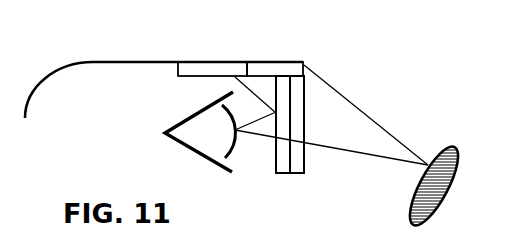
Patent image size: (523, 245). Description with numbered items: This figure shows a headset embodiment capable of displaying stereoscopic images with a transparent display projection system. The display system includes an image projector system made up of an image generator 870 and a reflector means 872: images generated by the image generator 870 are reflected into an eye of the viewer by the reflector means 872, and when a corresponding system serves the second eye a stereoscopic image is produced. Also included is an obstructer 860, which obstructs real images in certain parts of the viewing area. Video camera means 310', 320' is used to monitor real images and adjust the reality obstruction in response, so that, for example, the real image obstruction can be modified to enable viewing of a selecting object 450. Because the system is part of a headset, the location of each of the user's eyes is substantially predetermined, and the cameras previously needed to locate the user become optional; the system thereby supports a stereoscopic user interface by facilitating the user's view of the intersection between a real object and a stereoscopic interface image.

The image generator 870 is at (215, 61).
The video camera means 310' is at (215, 39).
The display element 320' is at (275, 69).
The obstructer 860 is at (295, 175).
The reflector means 872 is at (282, 175).
The selecting object 450 is at (452, 143).